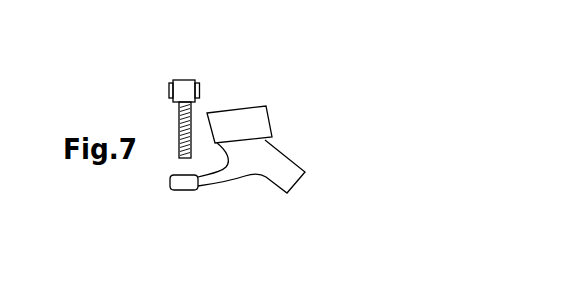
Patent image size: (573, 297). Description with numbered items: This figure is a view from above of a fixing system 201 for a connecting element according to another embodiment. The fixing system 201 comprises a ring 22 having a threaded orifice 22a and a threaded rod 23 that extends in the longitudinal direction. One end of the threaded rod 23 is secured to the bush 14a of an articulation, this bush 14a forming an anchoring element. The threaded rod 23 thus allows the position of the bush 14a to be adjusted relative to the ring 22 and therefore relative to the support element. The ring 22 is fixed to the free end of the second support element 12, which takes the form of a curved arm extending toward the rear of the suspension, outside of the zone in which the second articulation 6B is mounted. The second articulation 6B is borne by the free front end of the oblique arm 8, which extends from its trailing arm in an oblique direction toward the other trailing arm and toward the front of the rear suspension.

The threaded rod 23 is at (146, 84).
The bush 14a is at (180, 80).
The second articulation 6B is at (238, 122).
The oblique arm 8 is at (291, 160).
The second support element 12 is at (228, 178).
The ring 22 is at (195, 190).
The threaded orifice 22a is at (173, 199).
The fixing system 201 is at (321, 95).